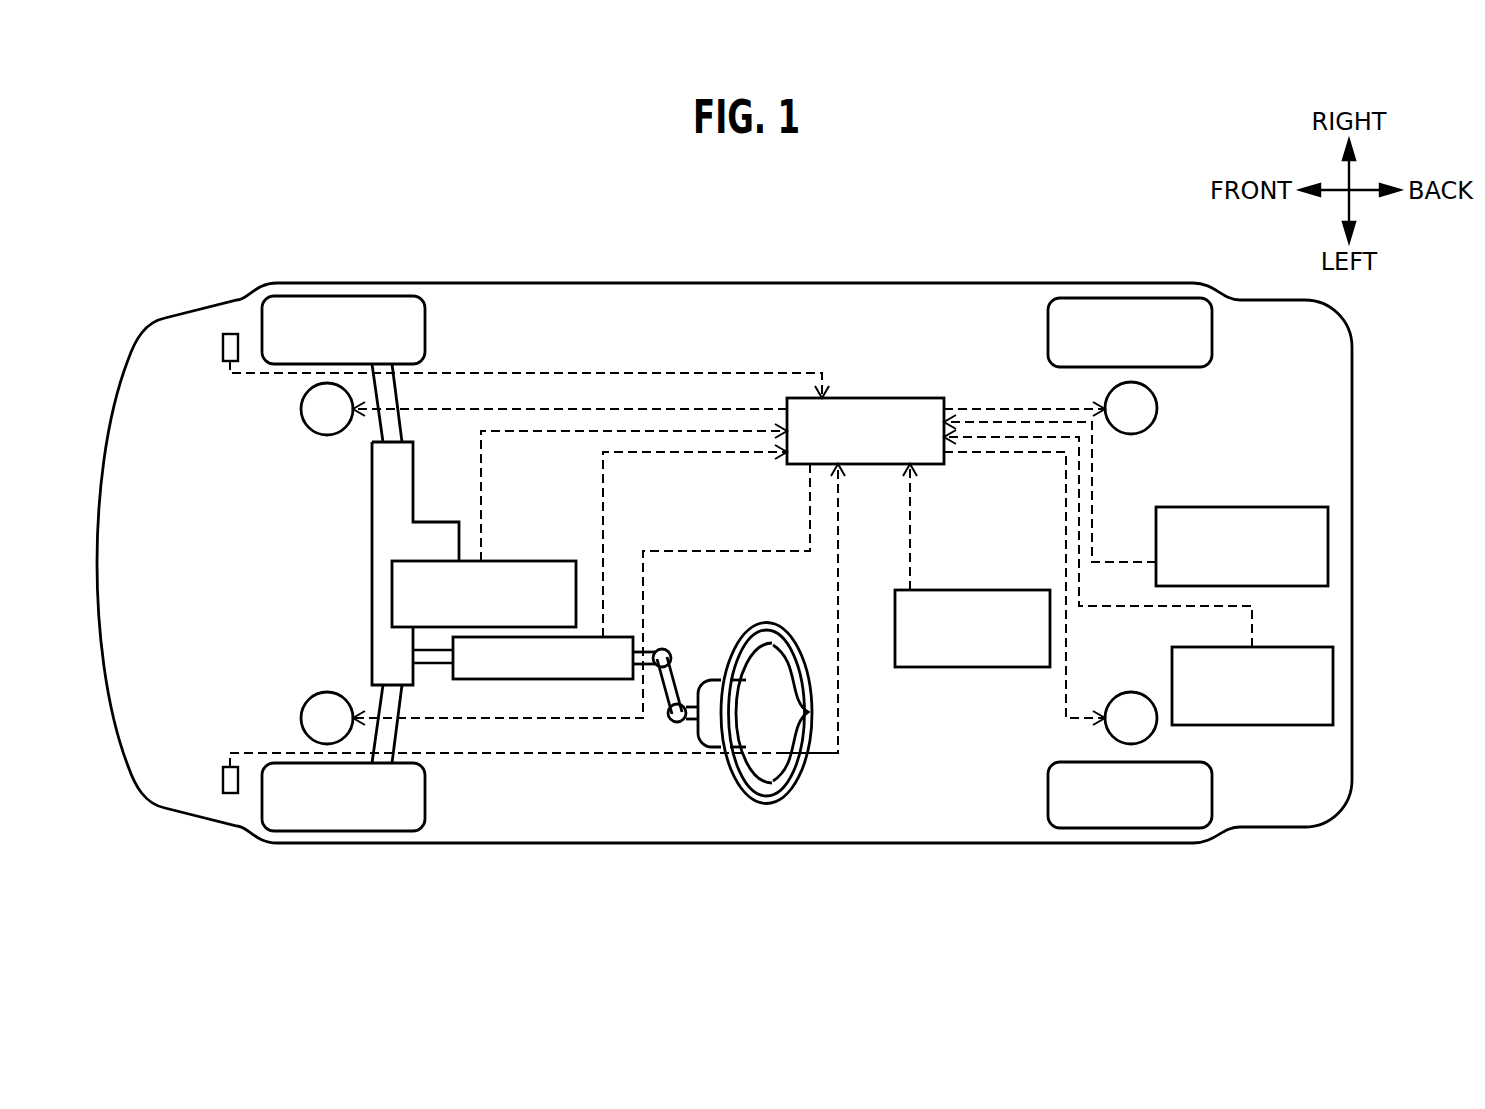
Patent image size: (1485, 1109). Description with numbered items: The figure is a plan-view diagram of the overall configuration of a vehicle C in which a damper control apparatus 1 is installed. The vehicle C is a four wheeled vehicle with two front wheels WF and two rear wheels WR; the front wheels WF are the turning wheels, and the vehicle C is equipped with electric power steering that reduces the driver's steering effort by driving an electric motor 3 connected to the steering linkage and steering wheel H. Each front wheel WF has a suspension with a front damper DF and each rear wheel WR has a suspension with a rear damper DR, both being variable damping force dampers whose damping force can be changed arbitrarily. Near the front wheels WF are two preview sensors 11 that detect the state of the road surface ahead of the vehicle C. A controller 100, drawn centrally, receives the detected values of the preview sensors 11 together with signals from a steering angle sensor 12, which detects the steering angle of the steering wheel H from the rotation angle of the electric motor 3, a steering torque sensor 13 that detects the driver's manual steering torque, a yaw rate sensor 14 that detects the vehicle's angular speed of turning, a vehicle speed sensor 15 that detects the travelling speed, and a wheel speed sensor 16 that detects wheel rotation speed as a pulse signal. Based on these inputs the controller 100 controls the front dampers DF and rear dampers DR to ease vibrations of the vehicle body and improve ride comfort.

The damper control apparatus 1 is at (848, 339).
The electric motor 3 is at (402, 552).
The preview sensor 11 is at (230, 328).
The steering angle sensor 12 is at (522, 558).
The steering torque sensor 13 is at (563, 680).
The yaw rate sensor 14 is at (985, 589).
The vehicle speed sensor 15 is at (1272, 505).
The wheel speed sensor 16 is at (1277, 645).
The controller 100 is at (878, 398).
The vehicle C is at (916, 268).
The steering wheel H is at (800, 775).
The front damper DF is at (303, 393).
The rear damper DR is at (1155, 393).
The front wheel WF is at (295, 310).
The rear wheel WR is at (1083, 310).